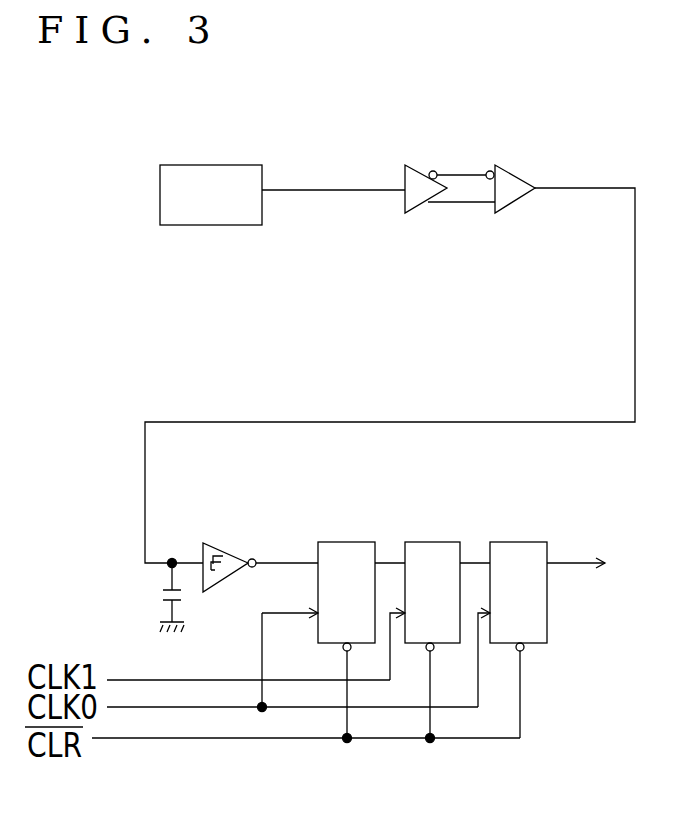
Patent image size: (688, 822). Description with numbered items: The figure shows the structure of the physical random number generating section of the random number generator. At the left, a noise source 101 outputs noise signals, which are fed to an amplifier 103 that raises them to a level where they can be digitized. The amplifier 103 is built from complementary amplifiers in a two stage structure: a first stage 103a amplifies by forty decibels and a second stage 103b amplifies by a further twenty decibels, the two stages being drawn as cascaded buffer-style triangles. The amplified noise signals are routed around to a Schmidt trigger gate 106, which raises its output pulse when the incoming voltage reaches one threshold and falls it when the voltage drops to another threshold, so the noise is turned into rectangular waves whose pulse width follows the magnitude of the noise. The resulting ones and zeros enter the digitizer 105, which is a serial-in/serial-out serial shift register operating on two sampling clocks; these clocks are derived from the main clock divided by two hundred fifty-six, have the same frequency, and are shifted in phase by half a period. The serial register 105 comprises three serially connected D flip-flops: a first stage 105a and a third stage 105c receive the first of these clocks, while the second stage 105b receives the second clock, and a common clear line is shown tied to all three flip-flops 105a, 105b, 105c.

The noise source 101 is at (212, 170).
The amplifier 103 is at (483, 138).
The first stage 103a is at (413, 165).
The second stage 103b is at (517, 168).
The digitizer 105 is at (440, 542).
The first stage 105a is at (347, 540).
The second stage 105b is at (433, 540).
The third stage 105c is at (527, 525).
The Schmidt trigger gate 106 is at (215, 545).